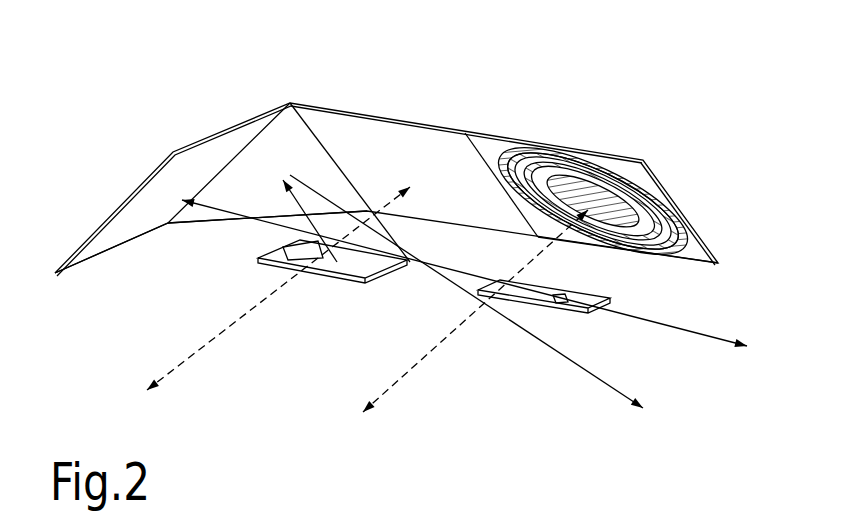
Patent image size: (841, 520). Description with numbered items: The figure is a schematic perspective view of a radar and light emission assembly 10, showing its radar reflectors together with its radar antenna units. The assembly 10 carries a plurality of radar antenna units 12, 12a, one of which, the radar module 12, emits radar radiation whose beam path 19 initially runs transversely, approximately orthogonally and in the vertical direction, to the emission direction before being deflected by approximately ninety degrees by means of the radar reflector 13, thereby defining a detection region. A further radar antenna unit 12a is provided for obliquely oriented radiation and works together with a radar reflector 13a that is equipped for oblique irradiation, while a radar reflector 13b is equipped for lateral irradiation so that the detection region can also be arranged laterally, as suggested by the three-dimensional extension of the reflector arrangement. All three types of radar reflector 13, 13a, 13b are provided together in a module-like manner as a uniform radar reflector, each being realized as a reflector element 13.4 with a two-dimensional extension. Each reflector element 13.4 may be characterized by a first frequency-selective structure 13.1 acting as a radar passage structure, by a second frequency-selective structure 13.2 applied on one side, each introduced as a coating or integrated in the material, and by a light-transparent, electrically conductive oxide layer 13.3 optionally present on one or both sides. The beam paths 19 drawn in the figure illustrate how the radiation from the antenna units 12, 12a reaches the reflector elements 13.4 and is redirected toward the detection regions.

The radar and light emission assembly 10 is at (554, 100).
The radar module 12 is at (565, 308).
The radar antenna unit for obliquely oriented radiation 12a is at (347, 269).
The radar reflector 13 is at (667, 172).
The radar reflector for oblique irradiation 13a is at (183, 228).
The radar reflector for lateral irradiation 13b is at (191, 143).
The first frequency-selective structure 13.1 is at (693, 257).
The second frequency-selective structure 13.2 is at (705, 236).
The light-transparent electrically conductive oxide layer 13.3 is at (443, 208).
The reflector element 13.4 is at (291, 101).
The beam path 19 is at (460, 313).